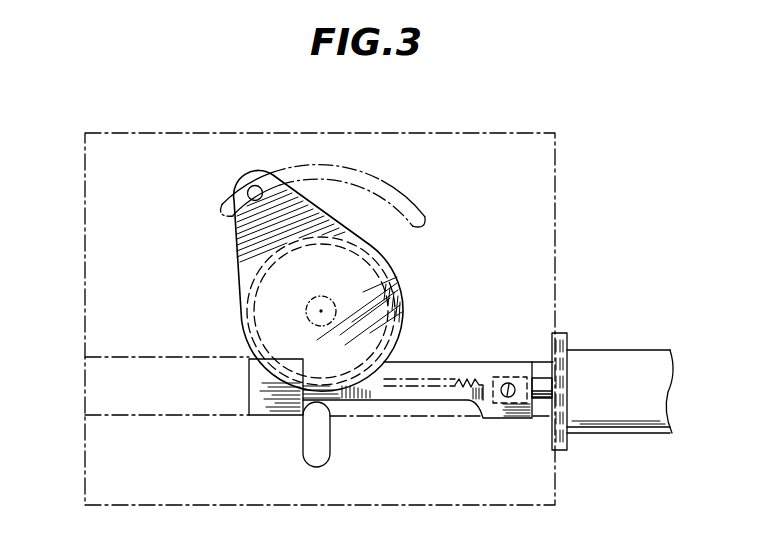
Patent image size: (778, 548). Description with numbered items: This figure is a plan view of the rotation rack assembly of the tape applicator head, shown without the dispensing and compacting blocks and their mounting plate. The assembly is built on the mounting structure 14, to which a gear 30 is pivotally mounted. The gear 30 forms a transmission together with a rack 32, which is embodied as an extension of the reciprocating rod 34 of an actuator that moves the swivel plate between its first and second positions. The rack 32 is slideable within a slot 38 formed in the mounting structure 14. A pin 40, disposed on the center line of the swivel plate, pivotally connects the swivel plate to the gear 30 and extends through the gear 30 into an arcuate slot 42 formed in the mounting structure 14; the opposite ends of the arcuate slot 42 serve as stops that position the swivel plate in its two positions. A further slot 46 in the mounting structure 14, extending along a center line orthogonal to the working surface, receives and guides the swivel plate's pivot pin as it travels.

The mounting structure 14 is at (100, 452).
The gear 30 is at (247, 250).
The rack 32 is at (424, 392).
The reciprocating rod 34 is at (545, 384).
The slot 38 is at (203, 358).
The pin 40 is at (255, 186).
The arcuate slot 42 is at (386, 180).
The slot 46 is at (310, 439).